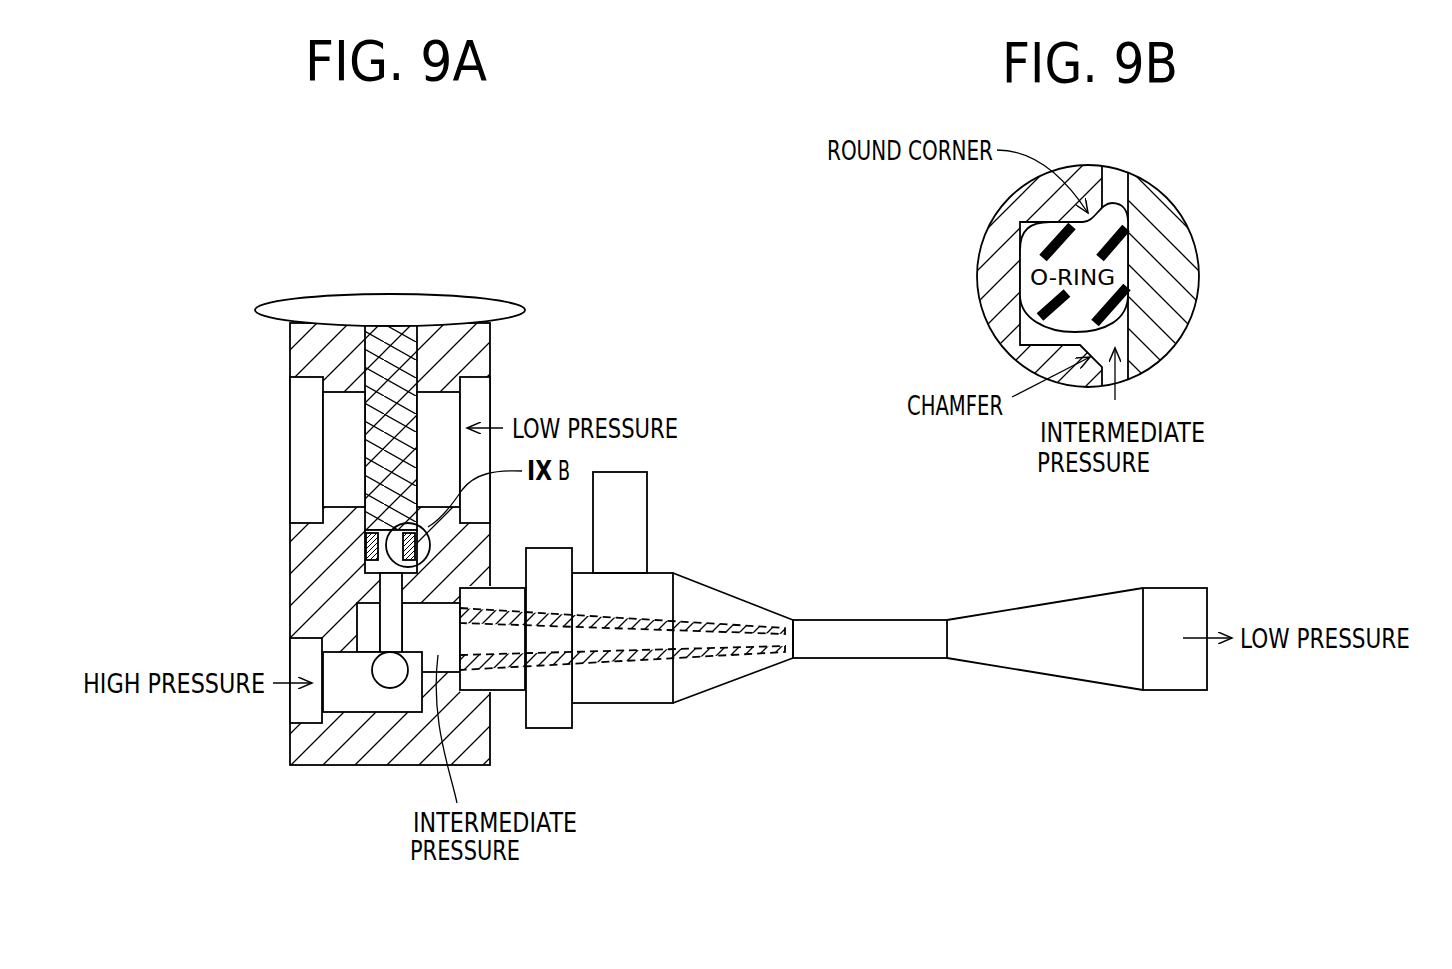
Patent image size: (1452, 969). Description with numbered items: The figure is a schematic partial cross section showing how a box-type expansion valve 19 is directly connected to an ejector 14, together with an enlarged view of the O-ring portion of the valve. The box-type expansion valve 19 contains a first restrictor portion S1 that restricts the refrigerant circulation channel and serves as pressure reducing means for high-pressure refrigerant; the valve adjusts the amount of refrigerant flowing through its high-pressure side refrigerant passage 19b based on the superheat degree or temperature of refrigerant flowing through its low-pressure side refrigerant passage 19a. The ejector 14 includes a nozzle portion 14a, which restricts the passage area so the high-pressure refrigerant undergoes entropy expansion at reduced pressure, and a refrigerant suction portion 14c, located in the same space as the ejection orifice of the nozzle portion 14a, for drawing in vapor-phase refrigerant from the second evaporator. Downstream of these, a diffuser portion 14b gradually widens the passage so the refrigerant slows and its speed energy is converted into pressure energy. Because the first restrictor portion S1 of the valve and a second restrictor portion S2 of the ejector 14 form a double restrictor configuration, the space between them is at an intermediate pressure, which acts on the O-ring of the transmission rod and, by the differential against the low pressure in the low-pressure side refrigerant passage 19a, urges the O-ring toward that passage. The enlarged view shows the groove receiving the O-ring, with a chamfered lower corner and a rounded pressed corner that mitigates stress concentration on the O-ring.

The box-type expansion valve 19 is at (452, 293).
The low-pressure side refrigerant passage 19a is at (492, 403).
The high-pressure side refrigerant passage 19b is at (288, 652).
The ejector 14 is at (730, 593).
The nozzle portion 14a is at (703, 657).
The diffuser portion 14b is at (1076, 670).
The refrigerant suction portion 14c is at (637, 522).
The first restrictor portion S1 is at (380, 655).
The second restrictor portion S2 is at (550, 633).